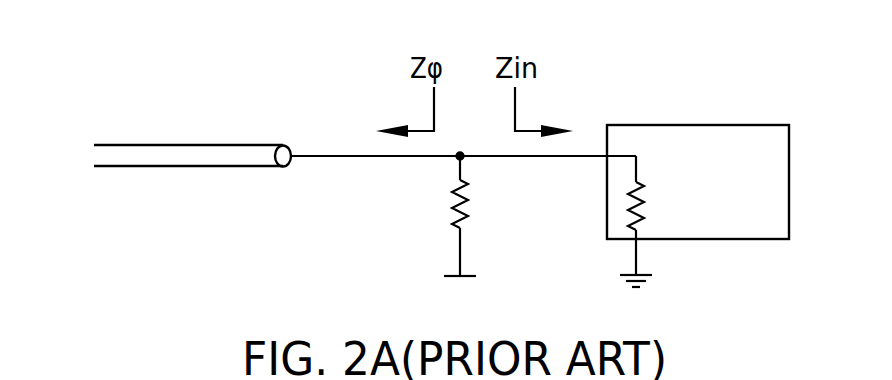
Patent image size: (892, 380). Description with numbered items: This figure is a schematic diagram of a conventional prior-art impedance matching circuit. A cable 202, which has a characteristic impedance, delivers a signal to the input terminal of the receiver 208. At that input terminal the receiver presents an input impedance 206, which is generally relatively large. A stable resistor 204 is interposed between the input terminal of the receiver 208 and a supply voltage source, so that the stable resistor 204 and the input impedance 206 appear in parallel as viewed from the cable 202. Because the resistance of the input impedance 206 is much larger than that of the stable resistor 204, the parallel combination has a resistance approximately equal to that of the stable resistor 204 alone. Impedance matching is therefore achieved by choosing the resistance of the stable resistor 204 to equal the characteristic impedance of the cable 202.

The cable 202 is at (166, 145).
The stable resistor 204 is at (452, 183).
The input impedance 206 is at (628, 186).
The receiver 208 is at (676, 125).